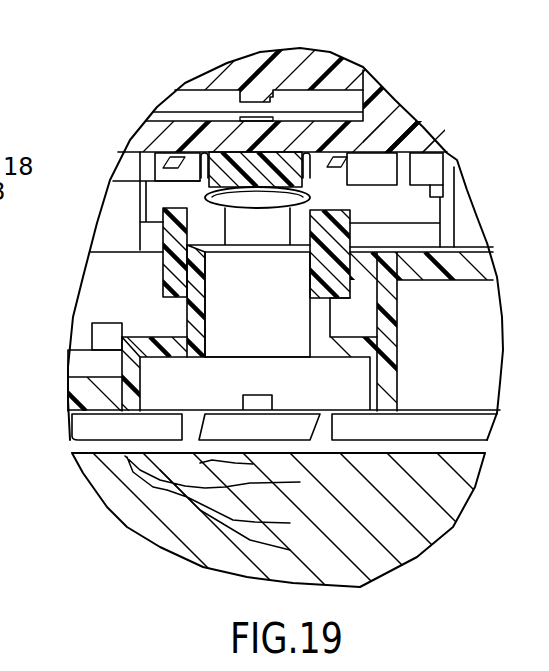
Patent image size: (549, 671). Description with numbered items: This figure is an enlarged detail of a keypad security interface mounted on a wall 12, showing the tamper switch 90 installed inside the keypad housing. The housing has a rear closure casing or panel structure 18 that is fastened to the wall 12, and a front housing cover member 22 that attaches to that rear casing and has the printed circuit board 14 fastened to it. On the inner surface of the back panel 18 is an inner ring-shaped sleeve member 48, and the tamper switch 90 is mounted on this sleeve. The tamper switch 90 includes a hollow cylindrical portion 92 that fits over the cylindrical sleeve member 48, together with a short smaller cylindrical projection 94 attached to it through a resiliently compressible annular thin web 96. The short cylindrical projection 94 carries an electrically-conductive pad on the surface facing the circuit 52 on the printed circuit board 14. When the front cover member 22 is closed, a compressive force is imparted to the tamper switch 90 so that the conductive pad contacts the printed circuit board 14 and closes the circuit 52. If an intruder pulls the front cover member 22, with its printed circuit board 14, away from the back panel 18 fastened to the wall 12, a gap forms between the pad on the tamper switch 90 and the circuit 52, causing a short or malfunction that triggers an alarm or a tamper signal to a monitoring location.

The wall 12 is at (123, 523).
The printed circuit board 14 is at (400, 128).
The rear closure casing or panel structure 18 is at (80, 385).
The front housing cover member 22 is at (320, 58).
The inner ring-shaped sleeve member 48 is at (313, 323).
The electrical circuit 52 is at (218, 152).
The tamper switch 90 is at (180, 228).
The cylindrical portion 92 is at (163, 278).
The short smaller cylindrical projection 94 is at (287, 157).
The resiliently compressible annular thin web 96 is at (203, 193).